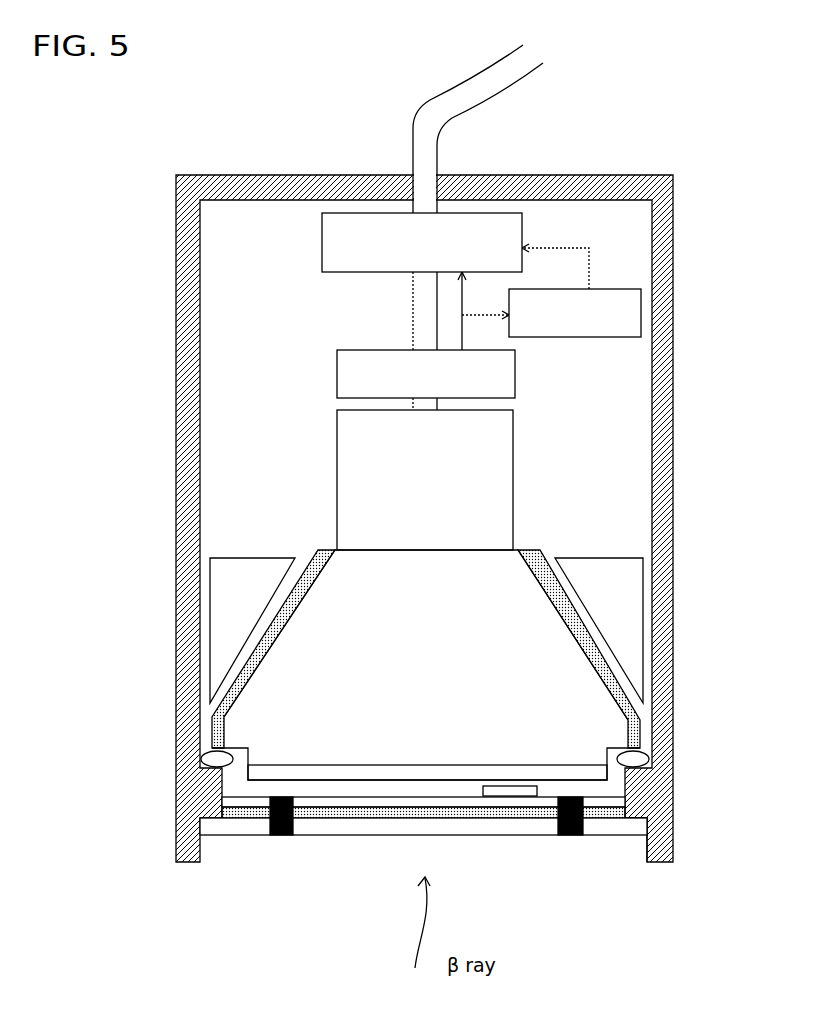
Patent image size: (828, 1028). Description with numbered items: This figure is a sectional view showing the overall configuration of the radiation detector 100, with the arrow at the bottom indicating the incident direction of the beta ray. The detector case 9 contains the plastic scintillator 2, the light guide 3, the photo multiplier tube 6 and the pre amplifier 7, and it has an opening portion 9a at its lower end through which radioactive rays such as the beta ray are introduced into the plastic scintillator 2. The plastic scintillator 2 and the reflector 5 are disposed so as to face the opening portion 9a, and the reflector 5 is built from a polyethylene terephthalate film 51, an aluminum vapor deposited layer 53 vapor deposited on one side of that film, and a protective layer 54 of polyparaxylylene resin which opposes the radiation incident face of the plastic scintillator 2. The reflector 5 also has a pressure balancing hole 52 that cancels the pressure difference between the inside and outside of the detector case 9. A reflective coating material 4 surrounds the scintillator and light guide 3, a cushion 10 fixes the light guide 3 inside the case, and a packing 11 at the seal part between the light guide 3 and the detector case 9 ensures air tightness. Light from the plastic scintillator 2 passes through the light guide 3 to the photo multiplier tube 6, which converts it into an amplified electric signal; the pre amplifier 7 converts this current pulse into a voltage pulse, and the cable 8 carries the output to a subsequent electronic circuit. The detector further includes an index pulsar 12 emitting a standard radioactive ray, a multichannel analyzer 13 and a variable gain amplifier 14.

The radiation detector 100 is at (717, 50).
The detector case 9 is at (613, 175).
The opening portion 9a is at (610, 848).
The cable 8 is at (445, 100).
The variable gain amplifier 14 is at (322, 243).
The pre amplifier 7 is at (337, 373).
The multichannel analyzer 13 is at (585, 337).
The photo multiplier tube 6 is at (513, 510).
The cushion 10 is at (228, 558).
The reflective coating material 4 is at (545, 550).
The light guide 3 is at (390, 548).
The plastic scintillator 2 is at (318, 764).
The packing 11 is at (648, 758).
The reflector 5 is at (376, 848).
The protective layer 54 is at (382, 790).
The aluminum vapor deposited layer 53 is at (328, 818).
The polyethylene terephthalate film 51 is at (252, 835).
The pressure balancing hole 52 is at (572, 835).
The index pulsar 12 is at (511, 797).